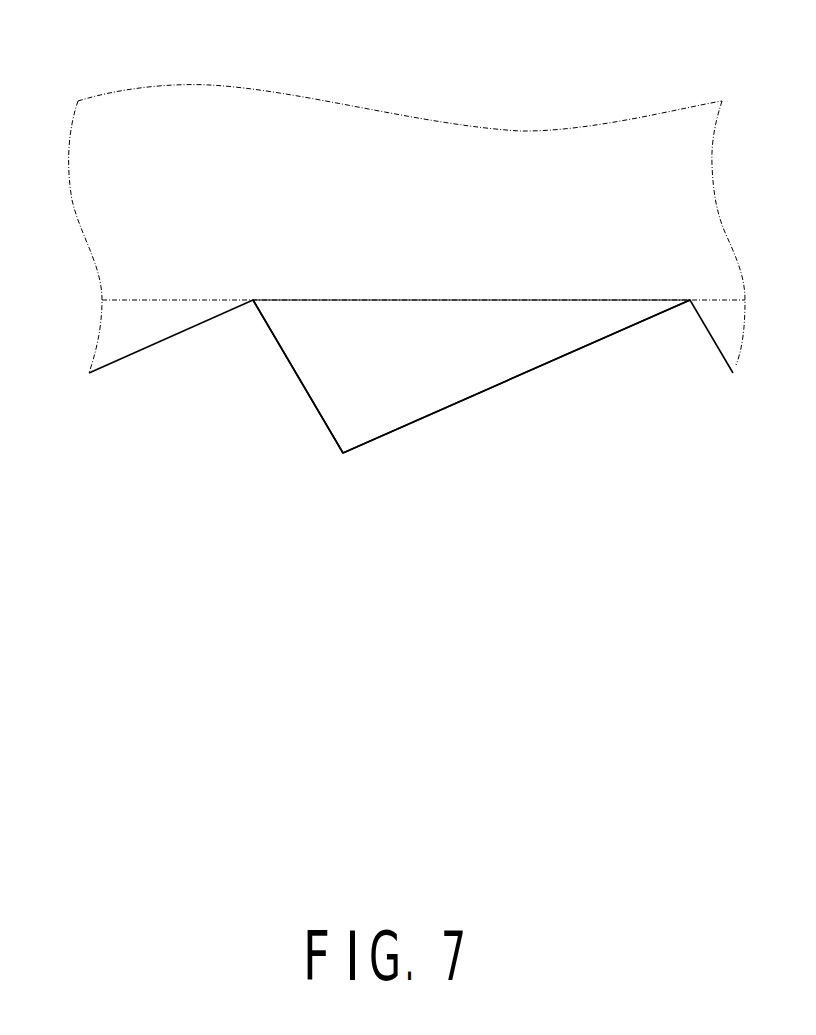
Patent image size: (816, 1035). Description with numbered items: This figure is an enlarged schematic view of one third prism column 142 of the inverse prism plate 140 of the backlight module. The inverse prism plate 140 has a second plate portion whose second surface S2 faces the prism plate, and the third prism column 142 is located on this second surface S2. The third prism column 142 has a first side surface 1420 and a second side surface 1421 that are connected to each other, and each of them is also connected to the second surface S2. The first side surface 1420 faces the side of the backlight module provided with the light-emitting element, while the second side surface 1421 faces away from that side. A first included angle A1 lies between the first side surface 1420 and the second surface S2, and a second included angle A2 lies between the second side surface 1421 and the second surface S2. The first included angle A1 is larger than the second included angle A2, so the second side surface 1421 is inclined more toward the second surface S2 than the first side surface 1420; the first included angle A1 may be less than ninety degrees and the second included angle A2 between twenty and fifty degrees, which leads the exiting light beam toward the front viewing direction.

The inverse prism plate 140 is at (25, 43).
The third prism column 142 is at (390, 380).
The first side surface 1420 is at (303, 387).
The second side surface 1421 is at (491, 390).
The second surface S2 is at (438, 302).
The first included angle A1 is at (279, 310).
The second included angle A2 is at (661, 310).